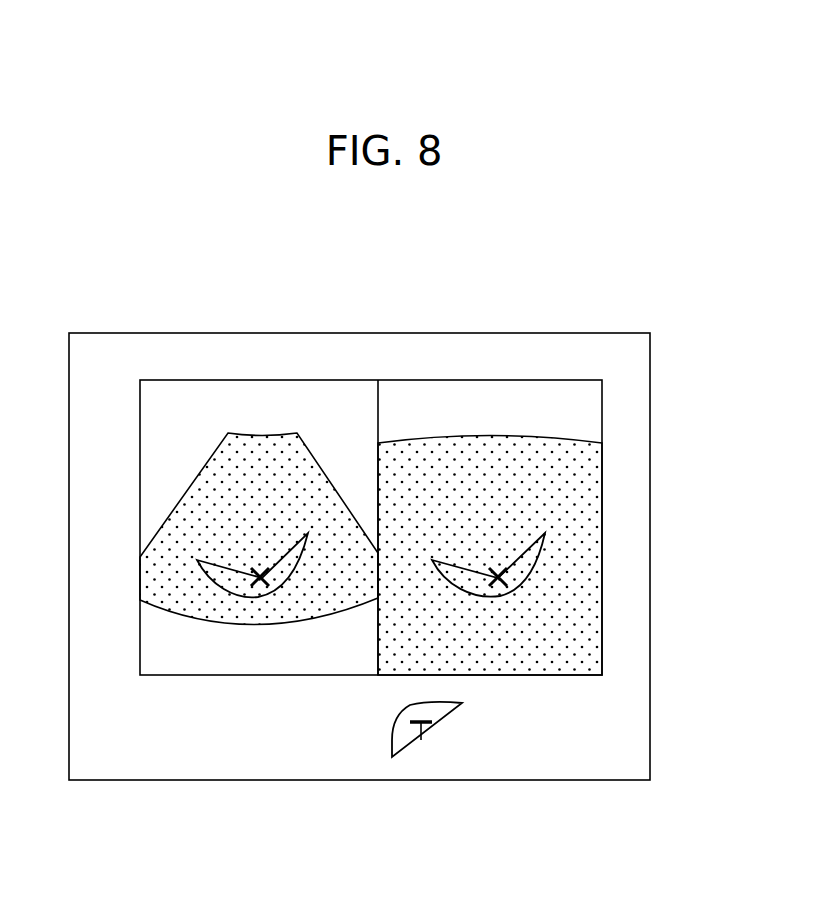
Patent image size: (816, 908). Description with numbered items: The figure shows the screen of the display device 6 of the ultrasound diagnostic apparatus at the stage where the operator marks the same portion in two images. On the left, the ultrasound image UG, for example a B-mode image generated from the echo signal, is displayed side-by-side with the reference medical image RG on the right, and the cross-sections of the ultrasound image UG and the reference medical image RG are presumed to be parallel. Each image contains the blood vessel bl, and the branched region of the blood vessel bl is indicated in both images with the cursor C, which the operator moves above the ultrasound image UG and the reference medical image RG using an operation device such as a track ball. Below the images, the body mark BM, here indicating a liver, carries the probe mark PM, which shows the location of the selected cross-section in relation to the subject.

The display device 6 is at (650, 450).
The ultrasound image UG is at (246, 450).
The reference medical image RG is at (510, 452).
The cursor C is at (261, 595).
The blood vessel bl is at (293, 563).
The probe mark PM is at (421, 740).
The body mark BM is at (445, 730).